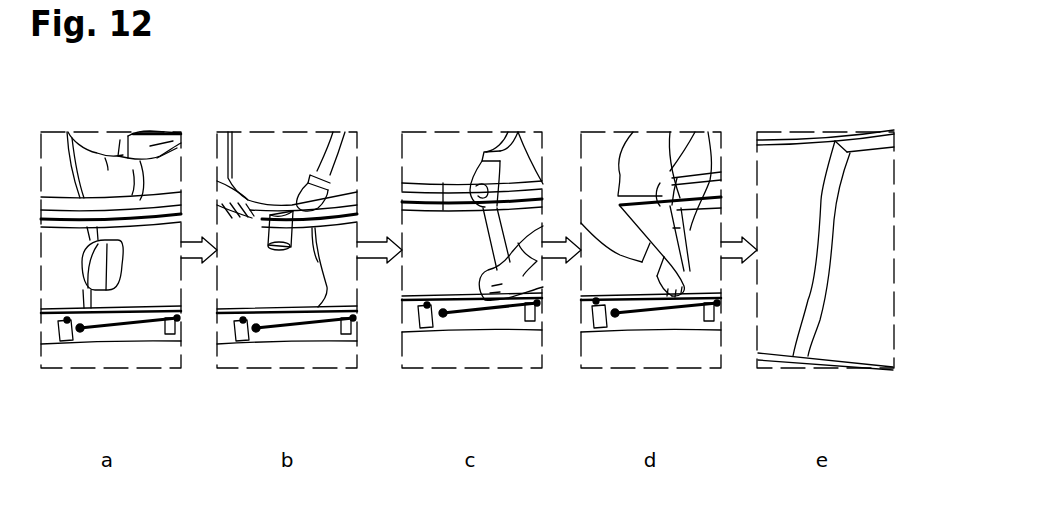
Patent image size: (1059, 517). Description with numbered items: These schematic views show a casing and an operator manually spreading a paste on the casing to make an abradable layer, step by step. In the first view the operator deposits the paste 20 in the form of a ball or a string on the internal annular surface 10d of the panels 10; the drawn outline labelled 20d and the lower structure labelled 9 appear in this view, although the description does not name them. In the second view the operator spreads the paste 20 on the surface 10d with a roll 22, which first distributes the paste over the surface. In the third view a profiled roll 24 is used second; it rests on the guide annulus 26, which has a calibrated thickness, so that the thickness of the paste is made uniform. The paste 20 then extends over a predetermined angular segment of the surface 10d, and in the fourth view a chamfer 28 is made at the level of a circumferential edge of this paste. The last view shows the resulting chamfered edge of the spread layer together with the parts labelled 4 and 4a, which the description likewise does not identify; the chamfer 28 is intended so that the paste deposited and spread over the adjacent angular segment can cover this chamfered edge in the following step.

In FIG. 12a, the panels 10 is at (111, 228).
In FIG. 12a, the storage pocket 20d is at (135, 263).
In FIG. 12a, the paste 20 is at (100, 273).
In FIG. 12a, the seat rail 9 is at (52, 333).
In FIG. 12b, the roll 22 is at (273, 249).
In FIG. 12c, the guide annulus 26 is at (431, 203).
In FIG. 12d, the guide annulus 26 is at (703, 194).
In FIG. 12c, the profiled roll 24 is at (490, 246).
In FIG. 12d, the profiled roll 24 is at (677, 228).
In FIG. 12e, the backrest 4 is at (792, 187).
In FIG. 12e, the backrest cover 4a is at (792, 187).
In FIG. 12e, the chamfer 28 is at (808, 338).
In FIG. 12e, the internal annular surface 10d is at (853, 335).